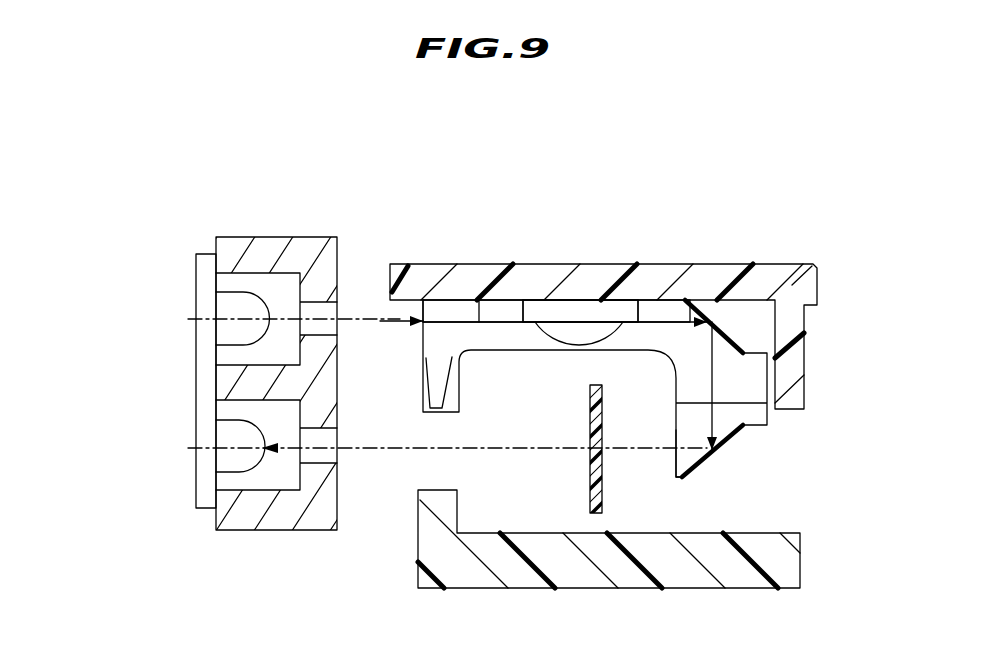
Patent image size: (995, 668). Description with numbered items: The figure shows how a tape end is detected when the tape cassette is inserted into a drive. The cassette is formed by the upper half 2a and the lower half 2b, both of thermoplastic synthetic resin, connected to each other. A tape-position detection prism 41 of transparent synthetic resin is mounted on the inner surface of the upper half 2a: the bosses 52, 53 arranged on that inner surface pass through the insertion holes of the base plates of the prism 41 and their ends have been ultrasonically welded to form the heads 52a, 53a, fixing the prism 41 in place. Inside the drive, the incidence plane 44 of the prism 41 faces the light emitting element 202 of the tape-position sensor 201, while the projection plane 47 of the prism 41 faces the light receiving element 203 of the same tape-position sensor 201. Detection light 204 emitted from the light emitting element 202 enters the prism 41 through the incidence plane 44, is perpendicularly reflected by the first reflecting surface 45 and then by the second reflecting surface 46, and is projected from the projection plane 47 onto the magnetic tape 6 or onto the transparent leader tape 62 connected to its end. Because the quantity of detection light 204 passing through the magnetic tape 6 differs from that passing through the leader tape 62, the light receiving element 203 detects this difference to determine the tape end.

The tape-position sensor 201 is at (238, 228).
The light emitting element 202 is at (242, 307).
The light receiving element 203 is at (232, 457).
The detection light 204 is at (373, 307).
The incidence plane 44 is at (420, 306).
The boss 52 is at (559, 245).
The boss 53 is at (558, 312).
The head 52a is at (625, 257).
The head 53a is at (590, 335).
The first reflecting surface 45 is at (705, 307).
The upper half 2a is at (792, 285).
The tape-position detection prism 41 is at (535, 360).
The second reflecting surface 46 is at (727, 438).
The projection plane 47 is at (673, 465).
The magnetic tape 6 is at (552, 520).
The transparent leader tape 62 is at (588, 482).
The lower half 2b is at (777, 570).